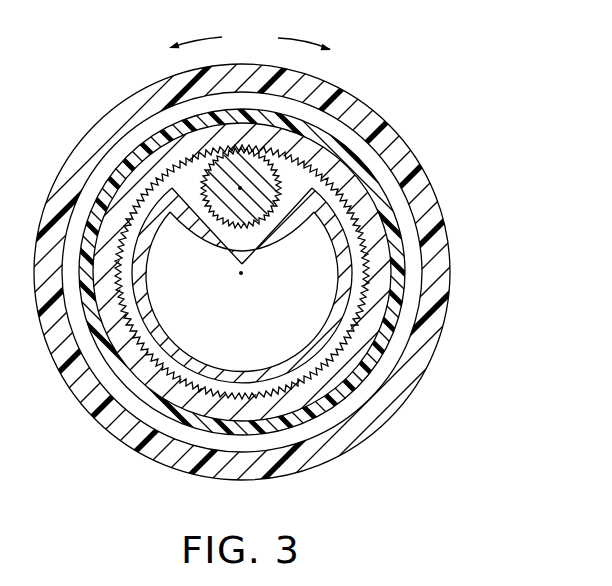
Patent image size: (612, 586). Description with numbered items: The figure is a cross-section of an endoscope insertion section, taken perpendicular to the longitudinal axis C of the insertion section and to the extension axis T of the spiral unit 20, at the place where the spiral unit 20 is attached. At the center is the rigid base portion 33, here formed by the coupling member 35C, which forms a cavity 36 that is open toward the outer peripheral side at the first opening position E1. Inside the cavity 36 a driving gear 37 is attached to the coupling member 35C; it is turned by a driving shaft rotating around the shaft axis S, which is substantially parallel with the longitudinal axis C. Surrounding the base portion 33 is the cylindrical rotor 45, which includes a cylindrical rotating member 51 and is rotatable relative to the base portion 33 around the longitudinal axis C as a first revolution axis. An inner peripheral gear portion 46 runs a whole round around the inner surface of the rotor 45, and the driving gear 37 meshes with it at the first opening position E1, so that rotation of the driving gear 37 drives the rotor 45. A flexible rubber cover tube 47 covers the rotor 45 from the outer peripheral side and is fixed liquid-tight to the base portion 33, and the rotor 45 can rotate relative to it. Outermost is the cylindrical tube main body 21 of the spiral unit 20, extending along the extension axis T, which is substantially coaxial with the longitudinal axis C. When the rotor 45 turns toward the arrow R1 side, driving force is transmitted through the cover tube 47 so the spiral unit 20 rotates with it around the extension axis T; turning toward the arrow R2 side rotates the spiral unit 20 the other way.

The spiral unit 20 is at (306, 293).
The tube main body 21 is at (382, 130).
The base portion 33 is at (306, 293).
The coupling member 35C is at (306, 293).
The cavity 36 is at (200, 217).
The driving gear 37 is at (297, 222).
The rotor 45 is at (162, 389).
The inner peripheral gear portion 46 is at (319, 371).
The cover tube 47 is at (331, 414).
The cylindrical rotating member 51 is at (293, 413).
The first opening position E1 is at (187, 173).
The shaft axis S is at (240, 190).
The longitudinal axis C is at (274, 286).
The extension axis T is at (243, 274).
The arrow R1 is at (304, 32).
The arrow R2 is at (195, 31).